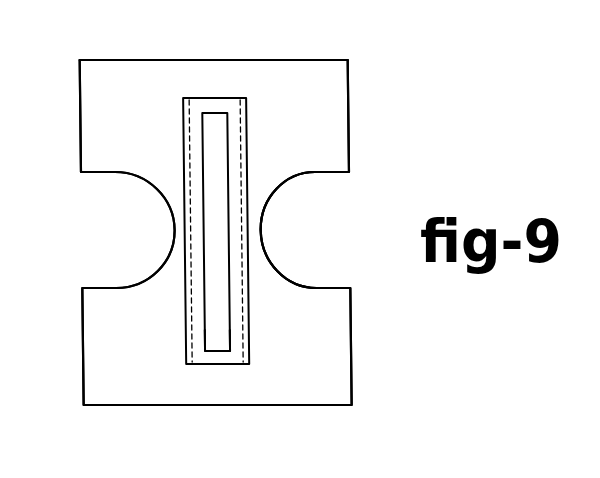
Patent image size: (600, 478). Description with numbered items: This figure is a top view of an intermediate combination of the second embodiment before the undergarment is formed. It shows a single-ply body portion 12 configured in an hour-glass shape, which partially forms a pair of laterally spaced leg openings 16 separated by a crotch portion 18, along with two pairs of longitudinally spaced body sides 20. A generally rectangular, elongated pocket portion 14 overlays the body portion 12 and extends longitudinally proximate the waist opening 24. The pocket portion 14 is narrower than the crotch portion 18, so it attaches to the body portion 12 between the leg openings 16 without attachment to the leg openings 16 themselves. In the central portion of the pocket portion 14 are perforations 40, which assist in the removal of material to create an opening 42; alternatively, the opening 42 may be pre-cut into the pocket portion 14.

The body portion 12 is at (148, 58).
The pocket portion 14 is at (232, 131).
The leg openings 16 is at (171, 218).
The crotch portion 18 is at (259, 190).
The body sides 20 is at (80, 110).
The waist opening 24 is at (232, 58).
The perforations 40 is at (229, 332).
The opening 42 is at (220, 342).